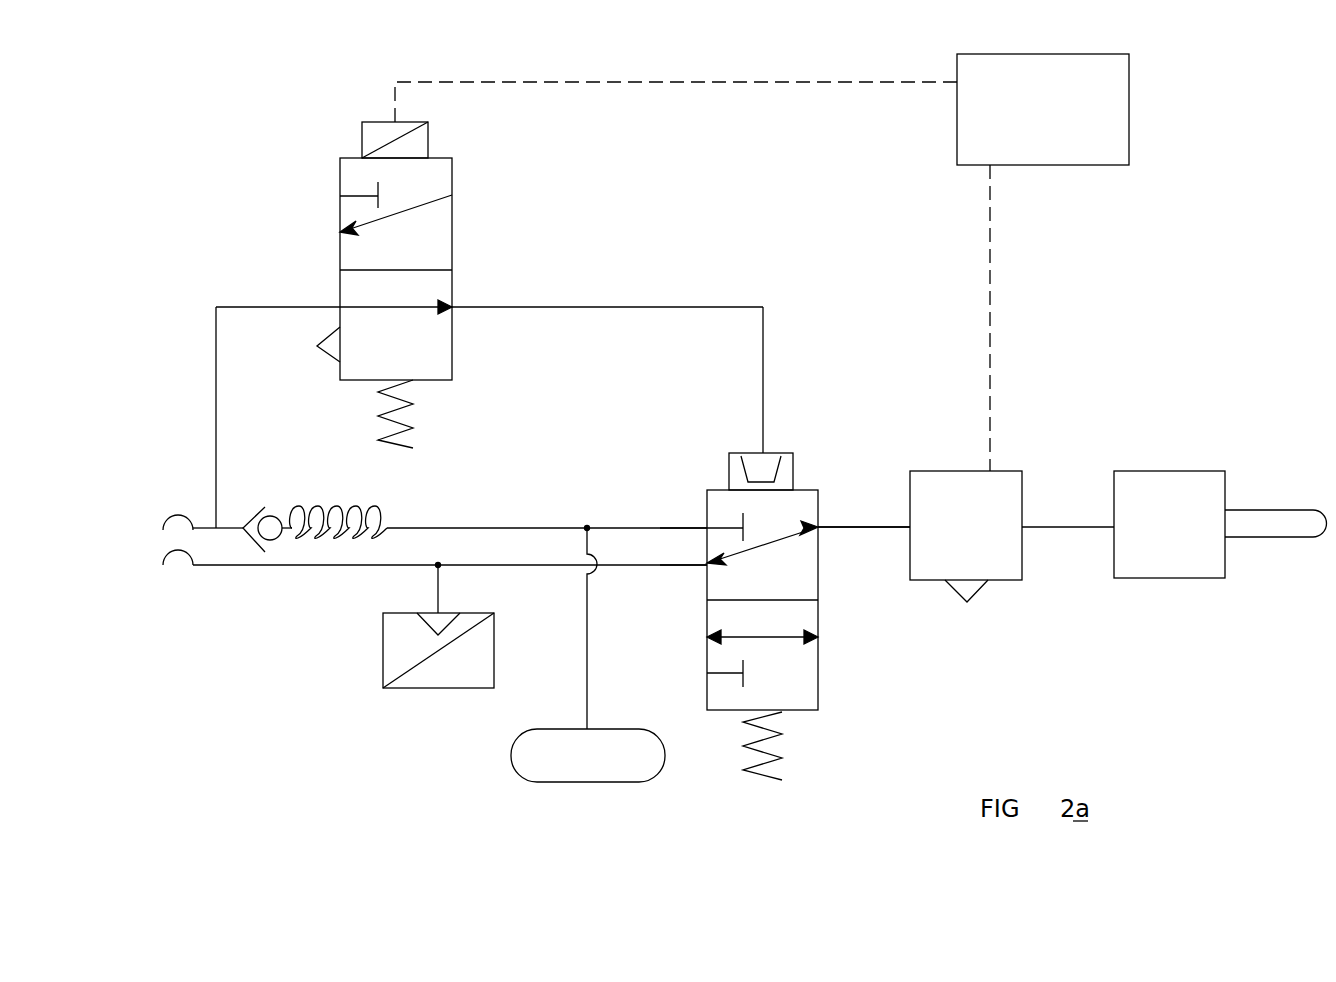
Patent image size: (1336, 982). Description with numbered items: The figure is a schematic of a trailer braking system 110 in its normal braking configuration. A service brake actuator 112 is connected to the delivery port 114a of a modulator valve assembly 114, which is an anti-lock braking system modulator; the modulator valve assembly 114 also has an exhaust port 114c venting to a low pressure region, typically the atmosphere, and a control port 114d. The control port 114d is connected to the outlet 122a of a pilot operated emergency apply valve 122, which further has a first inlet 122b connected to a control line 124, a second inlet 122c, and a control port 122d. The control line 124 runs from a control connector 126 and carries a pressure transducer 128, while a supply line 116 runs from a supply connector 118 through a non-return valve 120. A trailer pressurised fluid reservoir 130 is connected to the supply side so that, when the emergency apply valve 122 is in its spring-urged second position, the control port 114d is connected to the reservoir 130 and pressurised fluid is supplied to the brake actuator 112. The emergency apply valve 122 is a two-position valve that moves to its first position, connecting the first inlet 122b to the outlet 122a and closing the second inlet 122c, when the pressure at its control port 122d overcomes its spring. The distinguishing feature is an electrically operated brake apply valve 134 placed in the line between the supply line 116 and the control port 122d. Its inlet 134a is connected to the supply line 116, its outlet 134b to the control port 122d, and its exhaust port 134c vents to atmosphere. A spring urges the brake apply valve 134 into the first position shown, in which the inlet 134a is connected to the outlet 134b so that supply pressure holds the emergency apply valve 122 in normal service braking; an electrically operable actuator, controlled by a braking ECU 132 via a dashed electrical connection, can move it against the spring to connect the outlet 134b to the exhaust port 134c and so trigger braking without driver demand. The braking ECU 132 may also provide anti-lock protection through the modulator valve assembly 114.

The trailer braking system 110 is at (862, 672).
The service brake actuator 112 is at (1220, 524).
The modulator valve assembly 114 is at (966, 525).
The delivery port 114a is at (1022, 528).
The exhaust port 114c is at (968, 603).
The control port 114d is at (905, 536).
The supply line 116 is at (508, 527).
The supply connector 118 is at (176, 516).
The non-return valve 120 is at (340, 507).
The emergency apply valve 122 is at (707, 654).
The outlet 122a is at (820, 527).
The first inlet 122b is at (708, 564).
The second inlet 122c is at (707, 526).
The control port 122d is at (762, 452).
The control line 124 is at (538, 567).
The control connector 126 is at (180, 552).
The pressure transducer 128 is at (383, 646).
The trailer pressurised fluid reservoir 130 is at (588, 755).
The braking ECU 132 is at (762, 262).
The brake apply valve 134 is at (452, 240).
The inlet 134a is at (340, 306).
The outlet 134b is at (455, 306).
The exhaust port 134c is at (317, 347).